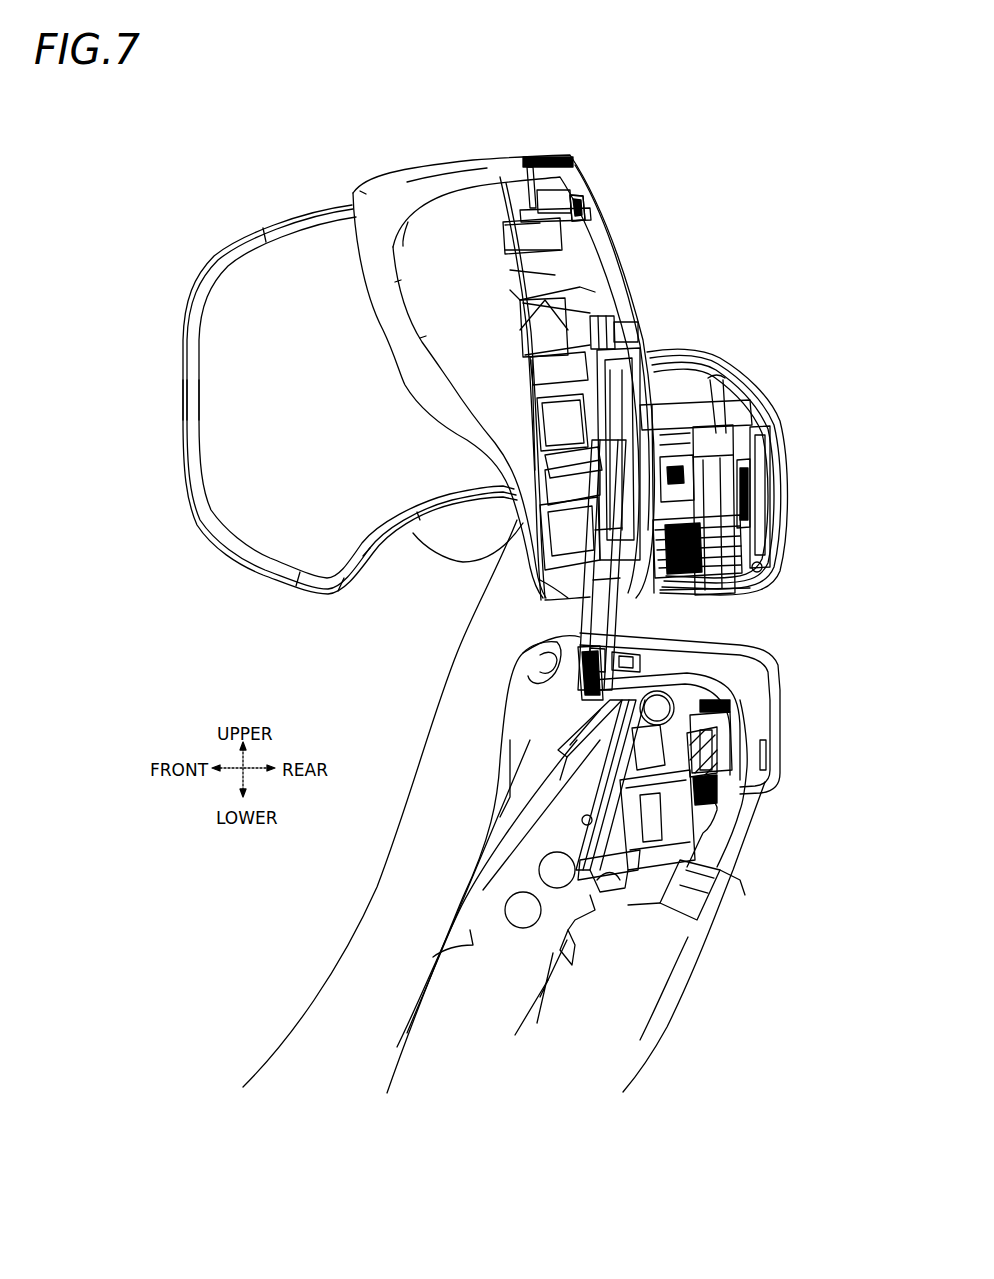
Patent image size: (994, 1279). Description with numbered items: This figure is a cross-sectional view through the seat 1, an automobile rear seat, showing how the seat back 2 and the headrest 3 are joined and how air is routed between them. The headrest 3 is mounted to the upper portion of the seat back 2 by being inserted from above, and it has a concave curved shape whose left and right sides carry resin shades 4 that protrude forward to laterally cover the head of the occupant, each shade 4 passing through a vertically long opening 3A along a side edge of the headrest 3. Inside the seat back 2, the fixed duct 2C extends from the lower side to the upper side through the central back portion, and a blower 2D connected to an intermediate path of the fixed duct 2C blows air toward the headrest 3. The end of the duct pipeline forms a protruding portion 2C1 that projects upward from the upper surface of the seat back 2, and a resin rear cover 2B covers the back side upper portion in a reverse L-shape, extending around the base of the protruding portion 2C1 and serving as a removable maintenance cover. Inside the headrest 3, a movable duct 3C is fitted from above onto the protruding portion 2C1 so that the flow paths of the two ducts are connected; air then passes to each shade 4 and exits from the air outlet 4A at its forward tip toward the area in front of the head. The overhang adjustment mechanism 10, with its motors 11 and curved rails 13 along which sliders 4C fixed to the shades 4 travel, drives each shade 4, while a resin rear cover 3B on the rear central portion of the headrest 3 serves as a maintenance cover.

The seat 1 is at (730, 153).
The seat back 2 is at (456, 701).
The rear cover 2B is at (770, 653).
The fixed duct 2C is at (677, 673).
The protruding portion 2C1 is at (602, 613).
The blower 2D is at (703, 747).
The headrest 3 is at (432, 172).
The opening 3A is at (371, 290).
The rear cover 3B is at (742, 383).
The movable duct 3C is at (587, 557).
The shade 4 is at (239, 285).
The air outlet 4A is at (197, 393).
The slider 4C is at (577, 208).
The overhang adjustment mechanism 10 is at (576, 305).
The motor 11 is at (594, 313).
The curved rail 13 is at (580, 214).